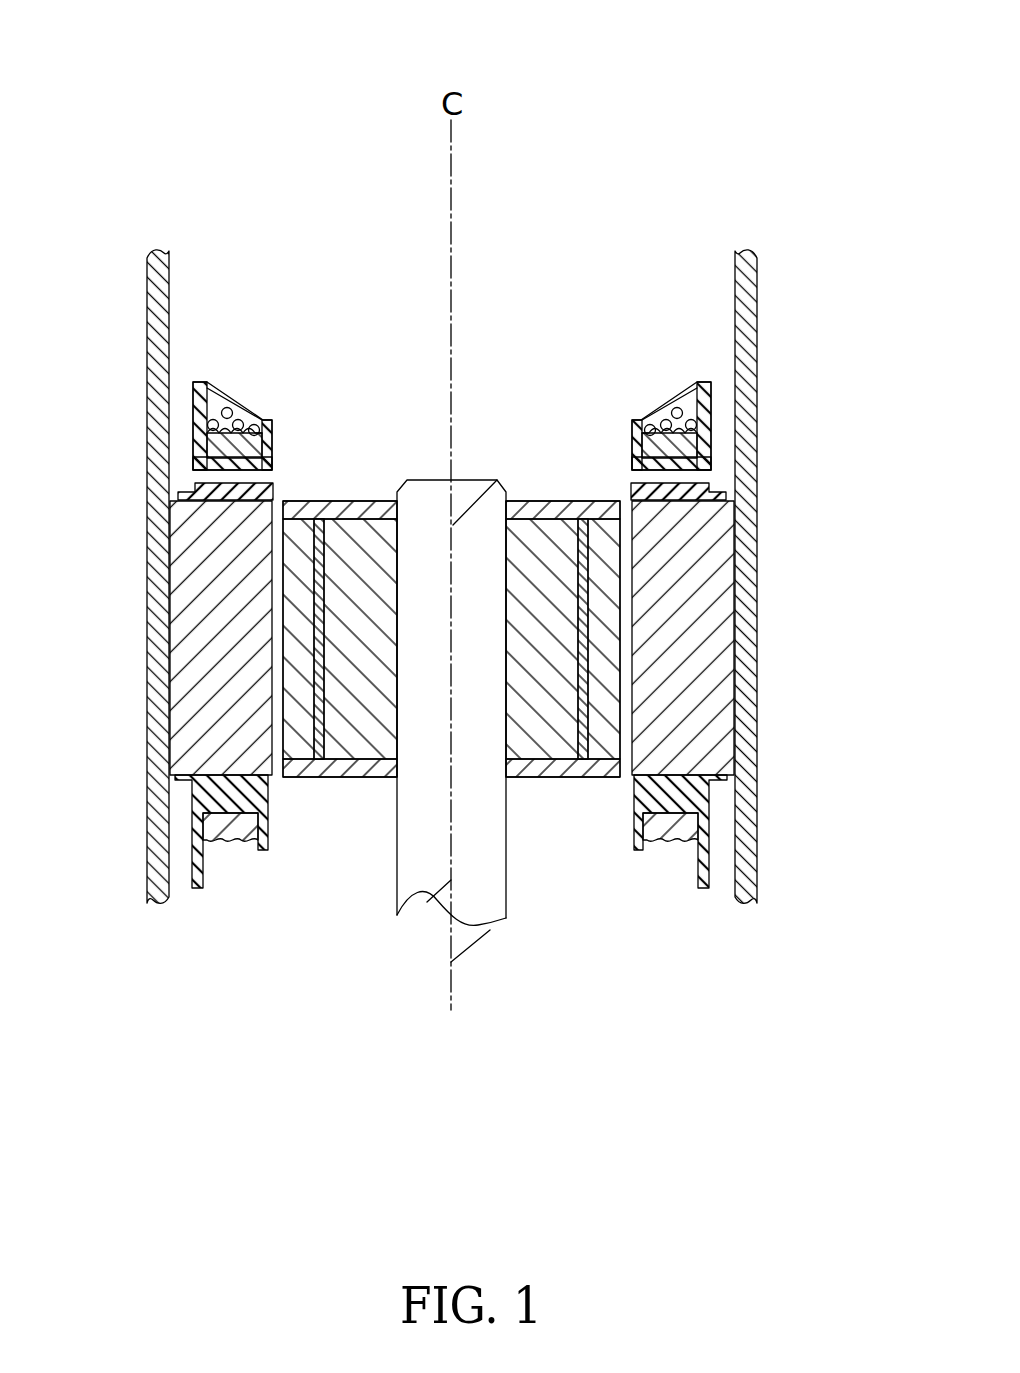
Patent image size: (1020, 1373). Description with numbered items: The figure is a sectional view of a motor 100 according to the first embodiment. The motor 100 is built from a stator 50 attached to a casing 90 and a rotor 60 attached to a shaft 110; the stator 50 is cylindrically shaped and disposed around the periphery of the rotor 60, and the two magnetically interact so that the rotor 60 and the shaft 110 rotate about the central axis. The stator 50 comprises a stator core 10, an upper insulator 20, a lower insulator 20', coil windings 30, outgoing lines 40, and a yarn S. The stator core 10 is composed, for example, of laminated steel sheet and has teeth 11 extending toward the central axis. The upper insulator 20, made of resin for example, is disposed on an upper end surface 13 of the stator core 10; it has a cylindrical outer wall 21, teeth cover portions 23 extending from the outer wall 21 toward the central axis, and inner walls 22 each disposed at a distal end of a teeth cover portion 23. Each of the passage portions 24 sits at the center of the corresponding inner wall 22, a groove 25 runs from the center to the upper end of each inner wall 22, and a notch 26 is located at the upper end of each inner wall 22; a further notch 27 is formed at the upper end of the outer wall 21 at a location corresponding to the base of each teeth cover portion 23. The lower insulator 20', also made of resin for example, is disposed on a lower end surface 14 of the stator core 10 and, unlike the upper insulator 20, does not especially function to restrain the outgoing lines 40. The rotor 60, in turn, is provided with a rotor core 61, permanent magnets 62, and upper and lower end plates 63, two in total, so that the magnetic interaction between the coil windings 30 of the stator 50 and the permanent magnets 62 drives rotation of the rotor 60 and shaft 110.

The motor 100 is at (325, 81).
The shaft 110 is at (488, 855).
The stator core 10 is at (715, 665).
The teeth 11 is at (554, 639).
The upper end surface 13 is at (662, 487).
The lower end surface 14 is at (662, 800).
The upper insulator 20 is at (725, 446).
The lower insulator 20' is at (727, 801).
The coil windings 30 is at (678, 446).
The outgoing lines 40 is at (677, 410).
The stator 50 is at (822, 845).
The rotor 60 is at (95, 607).
The rotor core 61 is at (102, 465).
The permanent magnets 62 is at (283, 597).
The upper and lower end plates 63 is at (283, 522).
The outer wall 21 is at (195, 428).
The inner walls 22 is at (275, 451).
The teeth cover portions 23 is at (278, 494).
The passage portions 24 is at (197, 480).
The groove 25 is at (272, 438).
The notch 26 is at (263, 419).
The notch 27 is at (208, 383).
The yarn S is at (237, 400).
The casing 90 is at (757, 870).